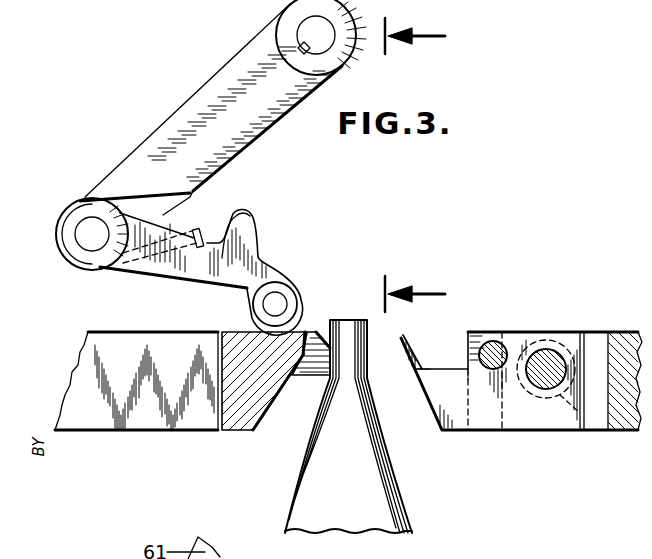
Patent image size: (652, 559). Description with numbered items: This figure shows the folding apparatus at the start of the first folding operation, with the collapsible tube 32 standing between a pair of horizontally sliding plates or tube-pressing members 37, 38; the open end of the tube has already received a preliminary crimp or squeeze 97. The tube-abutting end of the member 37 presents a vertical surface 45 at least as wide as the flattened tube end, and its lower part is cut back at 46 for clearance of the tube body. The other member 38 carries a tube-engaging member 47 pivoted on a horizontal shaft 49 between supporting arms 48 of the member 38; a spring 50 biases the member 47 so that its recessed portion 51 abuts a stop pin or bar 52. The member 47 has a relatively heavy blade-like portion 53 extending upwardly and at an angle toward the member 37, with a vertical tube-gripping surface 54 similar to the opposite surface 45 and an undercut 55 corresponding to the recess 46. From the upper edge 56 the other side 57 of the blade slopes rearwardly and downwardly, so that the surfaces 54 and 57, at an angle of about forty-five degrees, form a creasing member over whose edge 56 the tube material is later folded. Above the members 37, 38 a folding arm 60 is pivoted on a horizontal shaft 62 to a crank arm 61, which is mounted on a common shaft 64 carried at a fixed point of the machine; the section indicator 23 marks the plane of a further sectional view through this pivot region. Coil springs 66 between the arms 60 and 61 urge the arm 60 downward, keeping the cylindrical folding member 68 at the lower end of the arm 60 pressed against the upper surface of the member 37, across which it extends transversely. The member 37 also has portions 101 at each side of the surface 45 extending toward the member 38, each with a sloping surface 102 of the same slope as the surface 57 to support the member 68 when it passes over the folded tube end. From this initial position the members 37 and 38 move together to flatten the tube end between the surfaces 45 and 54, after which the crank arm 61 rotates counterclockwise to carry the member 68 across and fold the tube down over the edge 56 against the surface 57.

The section line 23 is at (398, 165).
The tube 32 is at (396, 500).
The tube-pressing member 37 is at (185, 412).
The tube-pressing member 38 is at (618, 426).
The vertical surface 45 is at (309, 332).
The recess 46 is at (262, 410).
The tube-engaging member 47 is at (534, 416).
The supporting arms 48 is at (485, 332).
The horizontal shaft 49 is at (548, 358).
The spring 50 is at (572, 330).
The recessed portion 51 is at (463, 368).
The stop pin 52 is at (495, 343).
The blade-like portion 53 is at (414, 361).
The vertical tube-gripping surface 54 is at (404, 346).
The undercut 55 is at (428, 398).
The creasing edge 56 is at (402, 337).
The sloping side surface 57 is at (421, 367).
The folding arm 60 is at (225, 257).
The crank arm 61 is at (260, 118).
The horizontal shaft 62 is at (90, 236).
The common shaft 64 is at (315, 34).
The coil springs 66 is at (73, 203).
The folding member 68 is at (258, 320).
The preliminary crimp 97 is at (372, 340).
The portions 101 is at (320, 368).
The sloping surface 102 is at (324, 334).